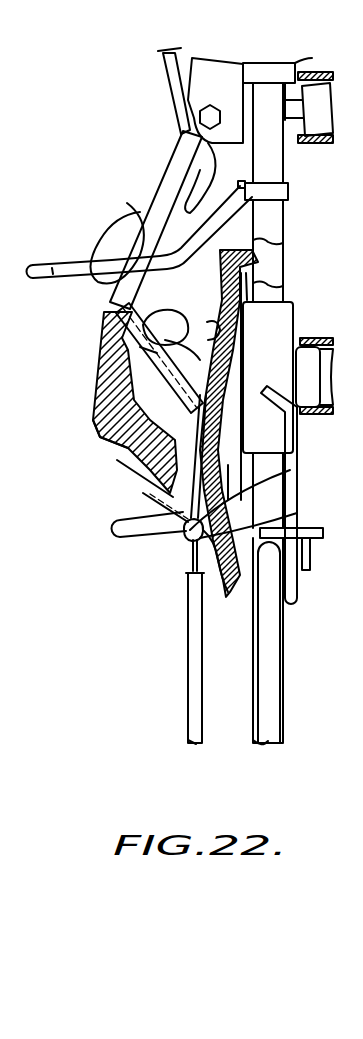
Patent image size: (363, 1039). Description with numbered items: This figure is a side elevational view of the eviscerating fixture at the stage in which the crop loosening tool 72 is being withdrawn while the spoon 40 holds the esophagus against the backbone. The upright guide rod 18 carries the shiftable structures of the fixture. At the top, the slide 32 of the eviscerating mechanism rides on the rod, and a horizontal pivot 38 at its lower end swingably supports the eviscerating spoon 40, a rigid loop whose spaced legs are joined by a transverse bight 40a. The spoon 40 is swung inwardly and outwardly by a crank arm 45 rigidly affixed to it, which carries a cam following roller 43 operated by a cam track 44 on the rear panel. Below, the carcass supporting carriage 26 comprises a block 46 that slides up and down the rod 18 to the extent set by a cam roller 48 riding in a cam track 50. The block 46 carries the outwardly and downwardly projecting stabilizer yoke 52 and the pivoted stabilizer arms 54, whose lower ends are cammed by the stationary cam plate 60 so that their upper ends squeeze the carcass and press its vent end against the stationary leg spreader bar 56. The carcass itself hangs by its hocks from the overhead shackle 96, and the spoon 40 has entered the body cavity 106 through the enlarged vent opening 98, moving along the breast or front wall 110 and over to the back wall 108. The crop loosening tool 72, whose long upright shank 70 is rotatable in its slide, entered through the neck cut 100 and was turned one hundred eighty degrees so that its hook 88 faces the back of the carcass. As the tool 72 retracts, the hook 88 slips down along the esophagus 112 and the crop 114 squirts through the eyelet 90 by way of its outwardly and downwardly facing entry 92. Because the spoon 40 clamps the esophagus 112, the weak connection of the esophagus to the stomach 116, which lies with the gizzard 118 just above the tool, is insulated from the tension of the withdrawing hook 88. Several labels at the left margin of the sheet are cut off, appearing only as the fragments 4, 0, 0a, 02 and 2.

The guide rod 18 is at (278, 725).
The carcass supporting carriage 26 is at (291, 282).
The slide 32 is at (217, 67).
The horizontal pivot 38 is at (205, 117).
The eviscerating spoon 40 is at (155, 170).
The transverse bight 40a is at (123, 450).
The cam following roller 43 is at (310, 87).
The cam track 44 is at (311, 143).
The crank arm 45 is at (290, 110).
The block 46 is at (286, 312).
The cam roller 48 is at (306, 352).
The cam track 50 is at (318, 414).
The stabilizer yoke 52 is at (130, 521).
The stabilizer arms 54 is at (293, 594).
The leg spreader bar 56 is at (60, 256).
The cam plate 60 is at (316, 540).
The shank 70 is at (193, 722).
The crop loosening tool 72 is at (178, 646).
The hook 88 is at (181, 540).
The eyelet 90 is at (297, 513).
The entry 92 is at (190, 540).
The overhead shackle 96 is at (163, 69).
The enlarged opening 98 is at (85, 277).
The neck cut 100 is at (186, 542).
The body cavity 106 is at (138, 240).
The back wall 108 is at (236, 338).
The front wall 110 is at (100, 358).
The esophagus 112 is at (180, 505).
The crop 114 is at (283, 478).
The stomach 116 is at (237, 376).
The gizzard 118 is at (190, 320).
The partial numeral 4 is at (6, 333).
The partial numeral 0 is at (6, 370).
The partial numeral 0a is at (6, 426).
The partial numeral 02 is at (13, 481).
The partial numeral 2 is at (6, 551).